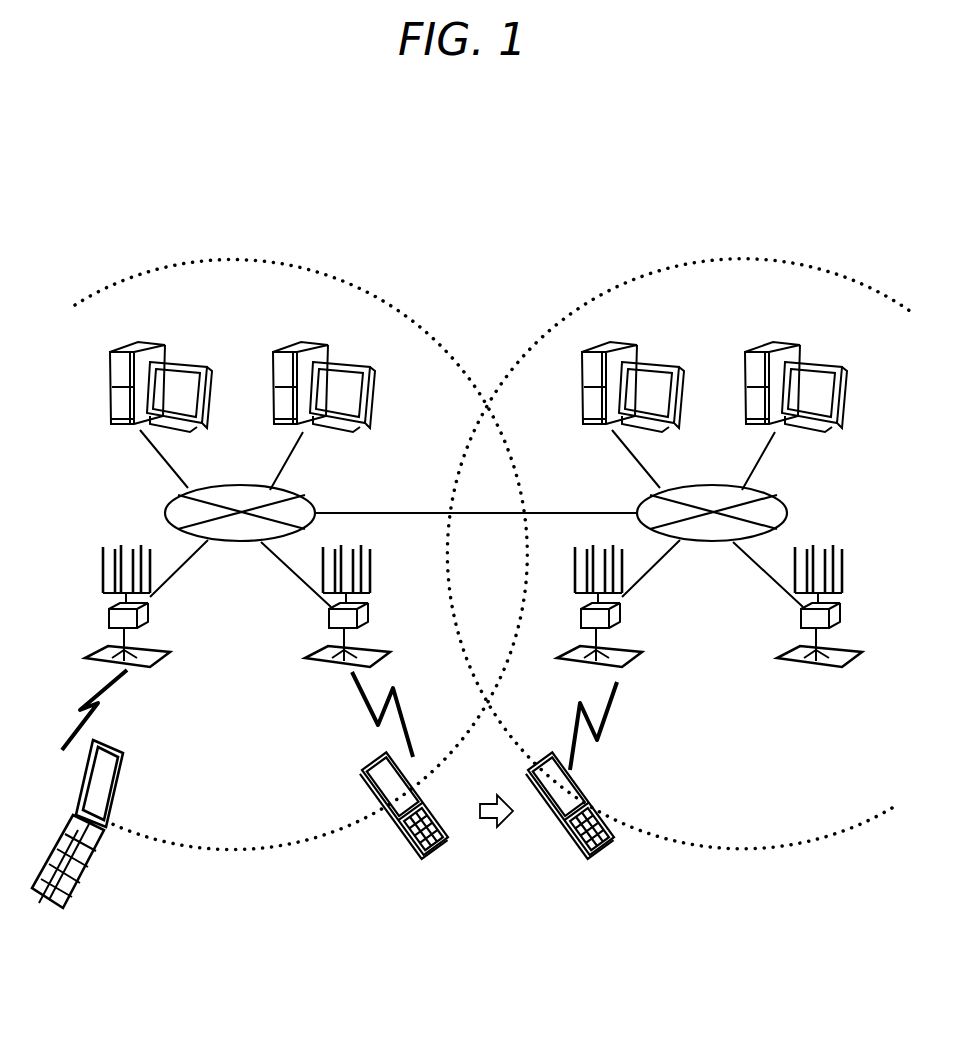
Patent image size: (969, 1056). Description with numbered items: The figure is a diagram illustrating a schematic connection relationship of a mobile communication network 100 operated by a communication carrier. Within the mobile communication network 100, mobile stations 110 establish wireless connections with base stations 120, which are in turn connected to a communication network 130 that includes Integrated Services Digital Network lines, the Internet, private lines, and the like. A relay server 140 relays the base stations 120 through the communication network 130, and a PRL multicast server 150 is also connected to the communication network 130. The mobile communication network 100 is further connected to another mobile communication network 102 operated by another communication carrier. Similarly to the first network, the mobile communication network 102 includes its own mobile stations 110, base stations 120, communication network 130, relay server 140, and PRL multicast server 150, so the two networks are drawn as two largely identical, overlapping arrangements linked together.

The mobile communication network 100 is at (126, 246).
The another mobile communication network 102 is at (640, 251).
The mobile stations 110 is at (181, 763).
The base stations 120 is at (147, 612).
The communication network 130 is at (192, 490).
The relay server 140 is at (158, 346).
The PRL multicast server 150 is at (321, 346).